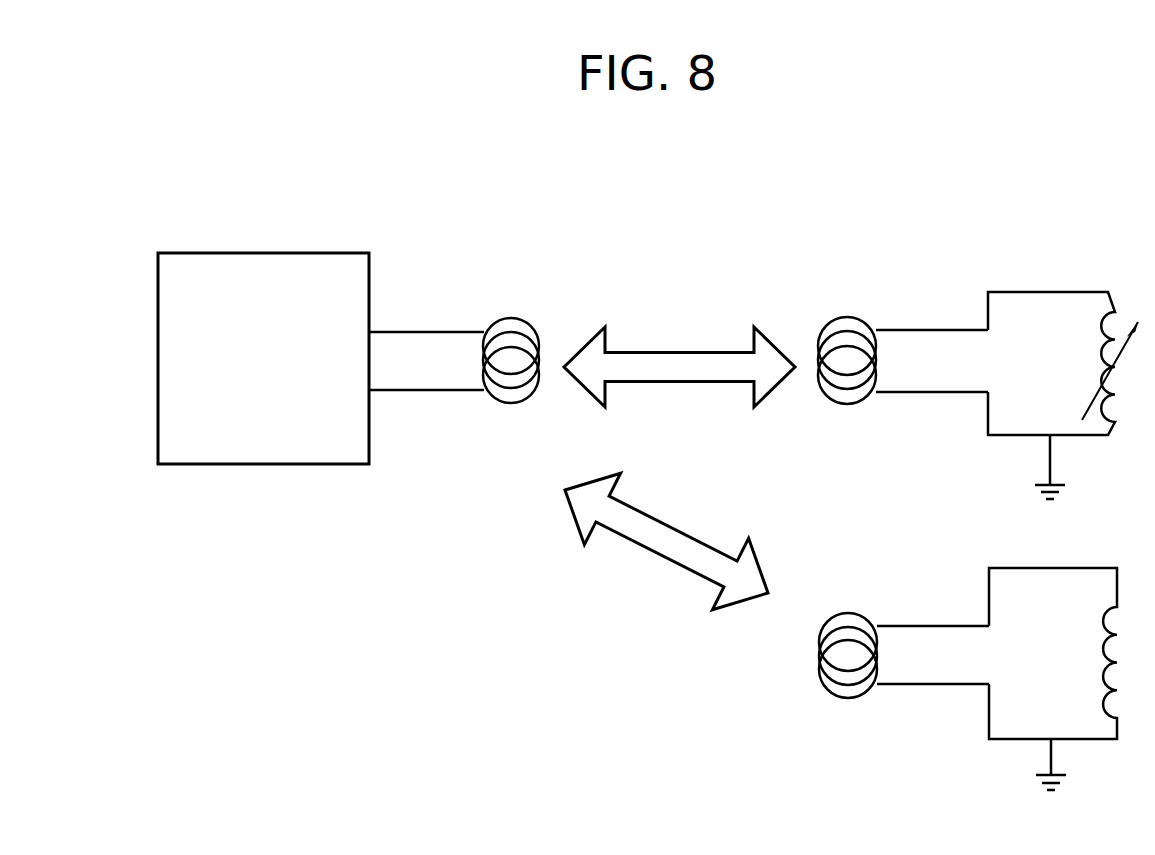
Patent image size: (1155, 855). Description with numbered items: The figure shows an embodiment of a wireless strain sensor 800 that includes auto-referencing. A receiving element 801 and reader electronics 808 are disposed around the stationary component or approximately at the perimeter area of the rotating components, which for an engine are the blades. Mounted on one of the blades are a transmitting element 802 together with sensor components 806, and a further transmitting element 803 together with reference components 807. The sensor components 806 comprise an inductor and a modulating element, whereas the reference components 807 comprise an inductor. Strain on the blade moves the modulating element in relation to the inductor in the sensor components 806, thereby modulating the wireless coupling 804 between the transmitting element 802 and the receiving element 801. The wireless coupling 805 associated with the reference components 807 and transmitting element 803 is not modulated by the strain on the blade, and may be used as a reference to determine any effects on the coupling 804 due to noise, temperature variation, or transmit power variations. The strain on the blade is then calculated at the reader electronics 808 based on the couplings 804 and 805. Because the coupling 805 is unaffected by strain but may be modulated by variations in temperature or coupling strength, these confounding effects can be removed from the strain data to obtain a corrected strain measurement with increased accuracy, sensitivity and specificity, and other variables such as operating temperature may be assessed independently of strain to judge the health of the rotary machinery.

The wireless strain sensor 800 is at (322, 208).
The receiving element 801 is at (507, 318).
The transmitting element 802 is at (850, 318).
The transmitting element 803 is at (850, 613).
The wireless coupling 804 is at (720, 383).
The wireless coupling 805 is at (656, 555).
The sensor components 806 is at (1093, 363).
The reference components 807 is at (1098, 655).
The reader electronics 808 is at (222, 465).